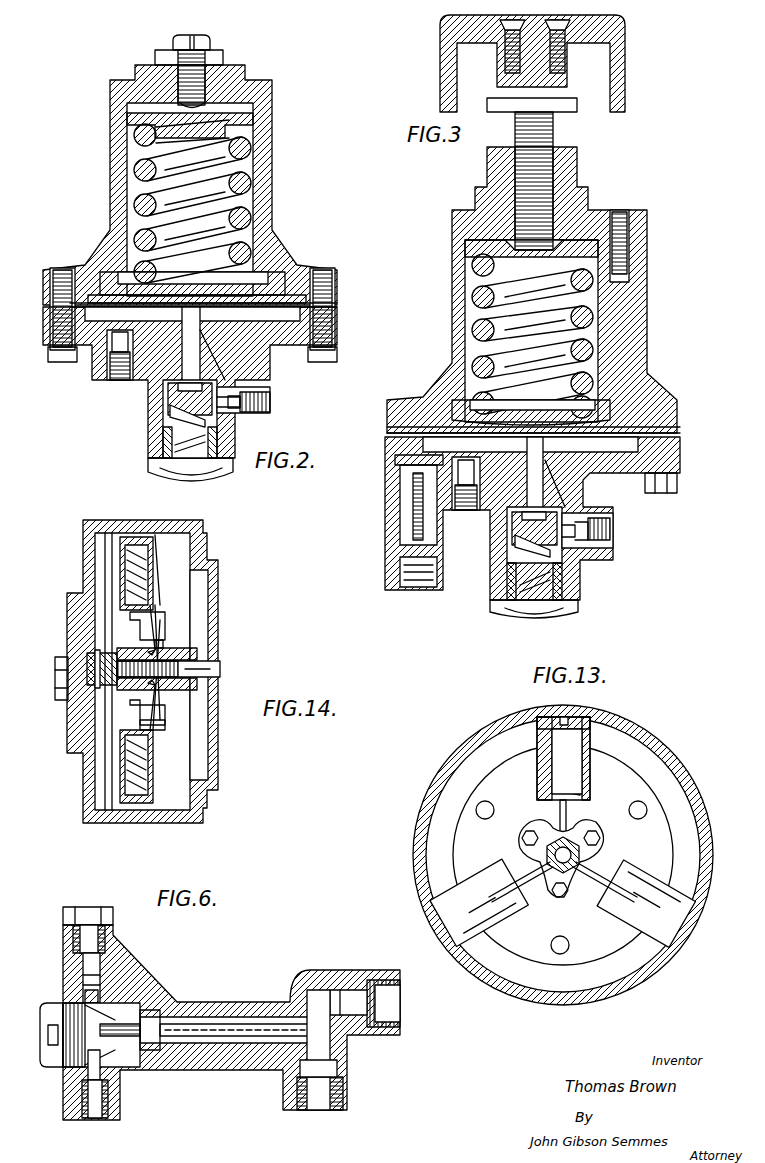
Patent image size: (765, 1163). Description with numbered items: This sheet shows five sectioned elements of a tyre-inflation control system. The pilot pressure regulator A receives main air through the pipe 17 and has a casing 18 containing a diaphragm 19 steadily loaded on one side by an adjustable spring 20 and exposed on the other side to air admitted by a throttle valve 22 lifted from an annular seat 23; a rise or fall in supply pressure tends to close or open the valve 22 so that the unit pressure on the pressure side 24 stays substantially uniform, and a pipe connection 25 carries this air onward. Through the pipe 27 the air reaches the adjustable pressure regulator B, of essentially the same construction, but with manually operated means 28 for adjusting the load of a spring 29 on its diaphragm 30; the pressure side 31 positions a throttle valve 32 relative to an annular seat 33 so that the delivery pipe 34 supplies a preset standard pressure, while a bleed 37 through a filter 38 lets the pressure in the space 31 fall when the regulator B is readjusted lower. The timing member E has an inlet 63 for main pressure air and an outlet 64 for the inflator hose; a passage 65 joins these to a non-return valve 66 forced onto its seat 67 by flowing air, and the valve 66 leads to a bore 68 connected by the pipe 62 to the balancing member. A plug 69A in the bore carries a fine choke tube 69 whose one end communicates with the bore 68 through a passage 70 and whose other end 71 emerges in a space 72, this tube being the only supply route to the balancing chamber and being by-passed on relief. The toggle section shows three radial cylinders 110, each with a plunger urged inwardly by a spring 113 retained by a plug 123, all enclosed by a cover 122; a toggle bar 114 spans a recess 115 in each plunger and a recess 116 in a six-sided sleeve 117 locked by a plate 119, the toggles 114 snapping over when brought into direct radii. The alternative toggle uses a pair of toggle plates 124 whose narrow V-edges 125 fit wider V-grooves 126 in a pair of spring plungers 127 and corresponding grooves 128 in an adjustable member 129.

In FIG. 2, the pilot pressure regulator A is at (283, 115).
In FIG. 2, the pipe 17 is at (307, 403).
In FIG. 2, the casing 18 is at (273, 145).
In FIG. 2, the diaphragm 19 is at (290, 275).
In FIG. 2, the adjustable spring 20 is at (243, 182).
In FIG. 2, the throttle valve 22 is at (165, 394).
In FIG. 2, the annular seat 23 is at (213, 375).
In FIG. 2, the pressure side 24 is at (115, 318).
In FIG. 2, the pipe connection 25 is at (117, 440).
In FIG. 3, the adjustable pressure regulator B is at (653, 226).
In FIG. 3, the pipe 27 is at (667, 530).
In FIG. 3, the manually operated means 28 is at (612, 100).
In FIG. 3, the spring 29 is at (601, 248).
In FIG. 3, the diaphragm 30 is at (646, 399).
In FIG. 3, the pressure side 31 is at (603, 444).
In FIG. 3, the throttle valve 32 is at (520, 523).
In FIG. 3, the annular seat 33 is at (552, 508).
In FIG. 3, the delivery pipe 34 is at (467, 597).
In FIG. 3, the bleed 37 is at (417, 530).
In FIG. 3, the filter 38 is at (413, 560).
In FIG. 13, the radial cylinders 110 is at (545, 748).
In FIG. 13, the spring 113 is at (543, 740).
In FIG. 13, the toggle bar 114 is at (558, 812).
In FIG. 13, the recess 115 is at (587, 795).
In FIG. 13, the recess 116 is at (547, 863).
In FIG. 13, the six-sided sleeve 117 is at (587, 847).
In FIG. 13, the plate 119 is at (573, 828).
In FIG. 13, the cover 122 is at (410, 850).
In FIG. 13, the retaining plug 123 is at (540, 715).
In FIG. 14, the toggle plate 124 is at (137, 635).
In FIG. 14, the V-edge 125 is at (158, 645).
In FIG. 14, the V-groove 126 is at (140, 733).
In FIG. 14, the spring plunger 127 is at (140, 647).
In FIG. 14, the groove 128 is at (167, 647).
In FIG. 14, the adjusting screw 129 is at (183, 655).
In FIG. 6, the timing member E is at (206, 992).
In FIG. 6, the pipe 62 is at (95, 1143).
In FIG. 6, the inlet 63 is at (400, 1002).
In FIG. 6, the outlet 64 is at (313, 1133).
In FIG. 6, the passage 65 is at (108, 952).
In FIG. 6, the non-return valve 66 is at (117, 980).
In FIG. 6, the seat 67 is at (118, 1003).
In FIG. 6, the bore 68 is at (97, 1053).
In FIG. 6, the choke tube 69 is at (230, 1030).
In FIG. 6, the nut 69A is at (130, 1050).
In FIG. 6, the passage 70 is at (125, 1015).
In FIG. 6, the end 71 is at (260, 1037).
In FIG. 6, the space 72 is at (273, 1033).